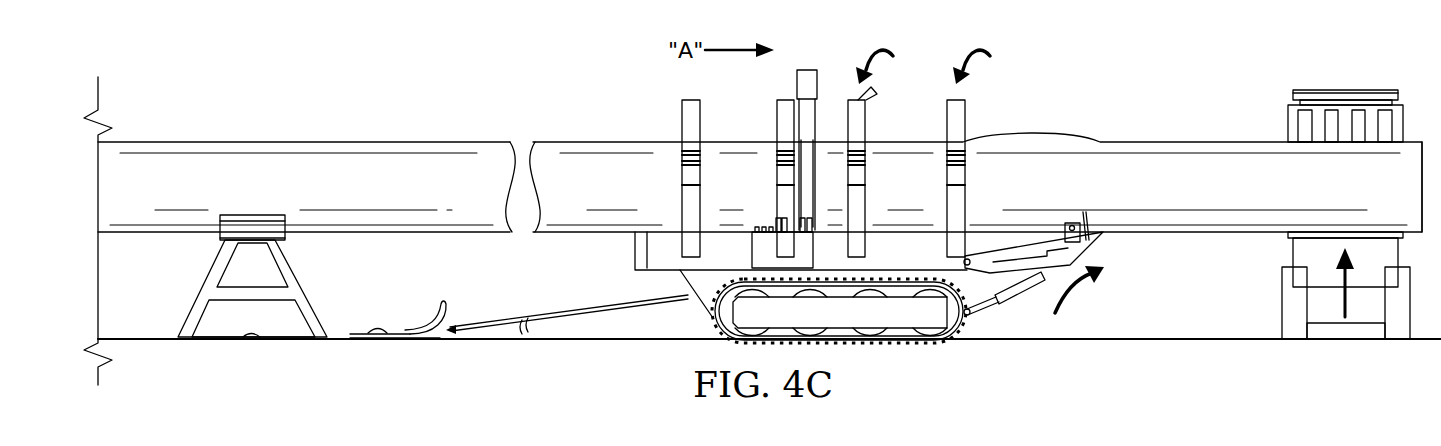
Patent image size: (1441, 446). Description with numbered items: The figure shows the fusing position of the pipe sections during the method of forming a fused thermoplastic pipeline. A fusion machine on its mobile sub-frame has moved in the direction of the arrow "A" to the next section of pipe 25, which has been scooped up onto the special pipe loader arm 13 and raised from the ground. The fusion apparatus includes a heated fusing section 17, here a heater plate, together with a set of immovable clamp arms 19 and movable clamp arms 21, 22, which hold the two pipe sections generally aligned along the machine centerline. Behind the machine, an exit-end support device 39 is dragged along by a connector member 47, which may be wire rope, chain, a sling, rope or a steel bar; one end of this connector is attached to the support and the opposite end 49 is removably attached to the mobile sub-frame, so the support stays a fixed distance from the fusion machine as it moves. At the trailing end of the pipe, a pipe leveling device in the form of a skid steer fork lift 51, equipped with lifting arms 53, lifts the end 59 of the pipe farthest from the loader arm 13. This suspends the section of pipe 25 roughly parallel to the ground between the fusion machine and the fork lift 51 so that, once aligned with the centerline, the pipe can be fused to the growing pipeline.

The pipe loading arm 13 is at (1120, 261).
The heated fusing section 17 is at (810, 80).
The immovable clamp arms 19 is at (690, 120).
The movable clamp arms 21 is at (857, 120).
The movable clamp arm 22 is at (962, 118).
The second section of pipe 25 is at (1165, 150).
The exit-end support device 39 is at (168, 289).
The connector member 47 is at (606, 300).
The connector attachment end 49 is at (688, 303).
The skid steer fork lift 51 is at (1259, 72).
The lifting arms 53 is at (1288, 234).
The pipe end 59 is at (1423, 160).